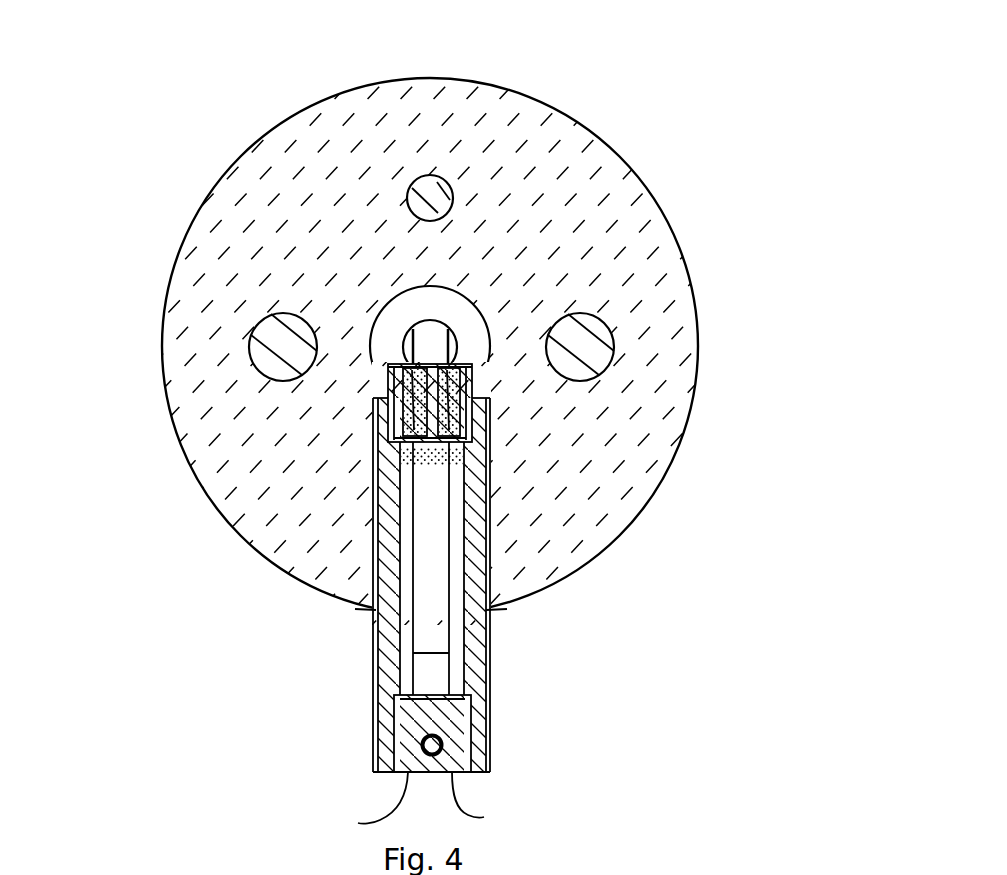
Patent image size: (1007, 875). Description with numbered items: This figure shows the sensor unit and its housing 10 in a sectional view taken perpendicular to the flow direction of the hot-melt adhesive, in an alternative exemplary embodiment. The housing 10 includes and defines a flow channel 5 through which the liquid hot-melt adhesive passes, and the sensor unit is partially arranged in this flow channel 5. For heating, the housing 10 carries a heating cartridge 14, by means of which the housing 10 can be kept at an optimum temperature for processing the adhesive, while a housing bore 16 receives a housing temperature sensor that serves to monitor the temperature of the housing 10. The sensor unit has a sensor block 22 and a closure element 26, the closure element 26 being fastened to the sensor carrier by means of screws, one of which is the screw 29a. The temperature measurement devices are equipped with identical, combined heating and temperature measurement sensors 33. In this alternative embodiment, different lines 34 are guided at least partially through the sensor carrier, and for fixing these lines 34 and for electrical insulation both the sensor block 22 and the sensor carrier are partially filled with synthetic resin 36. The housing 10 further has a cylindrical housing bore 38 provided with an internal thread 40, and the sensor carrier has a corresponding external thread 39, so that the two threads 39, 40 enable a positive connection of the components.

The housing 10 is at (538, 137).
The housing bore 16 is at (435, 201).
The heating cartridge 14 is at (280, 340).
The flow channel 5 is at (436, 340).
The combined heating and temperature measurement sensors 33 is at (410, 338).
The sensor block 22 is at (460, 385).
The synthetic resin 36 is at (460, 450).
The cylindrical housing bore 38 is at (503, 528).
The external thread 39 is at (373, 652).
The internal thread 40 is at (375, 568).
The lines 34 is at (417, 653).
The closure element 26 is at (453, 717).
The screw 29a is at (438, 744).